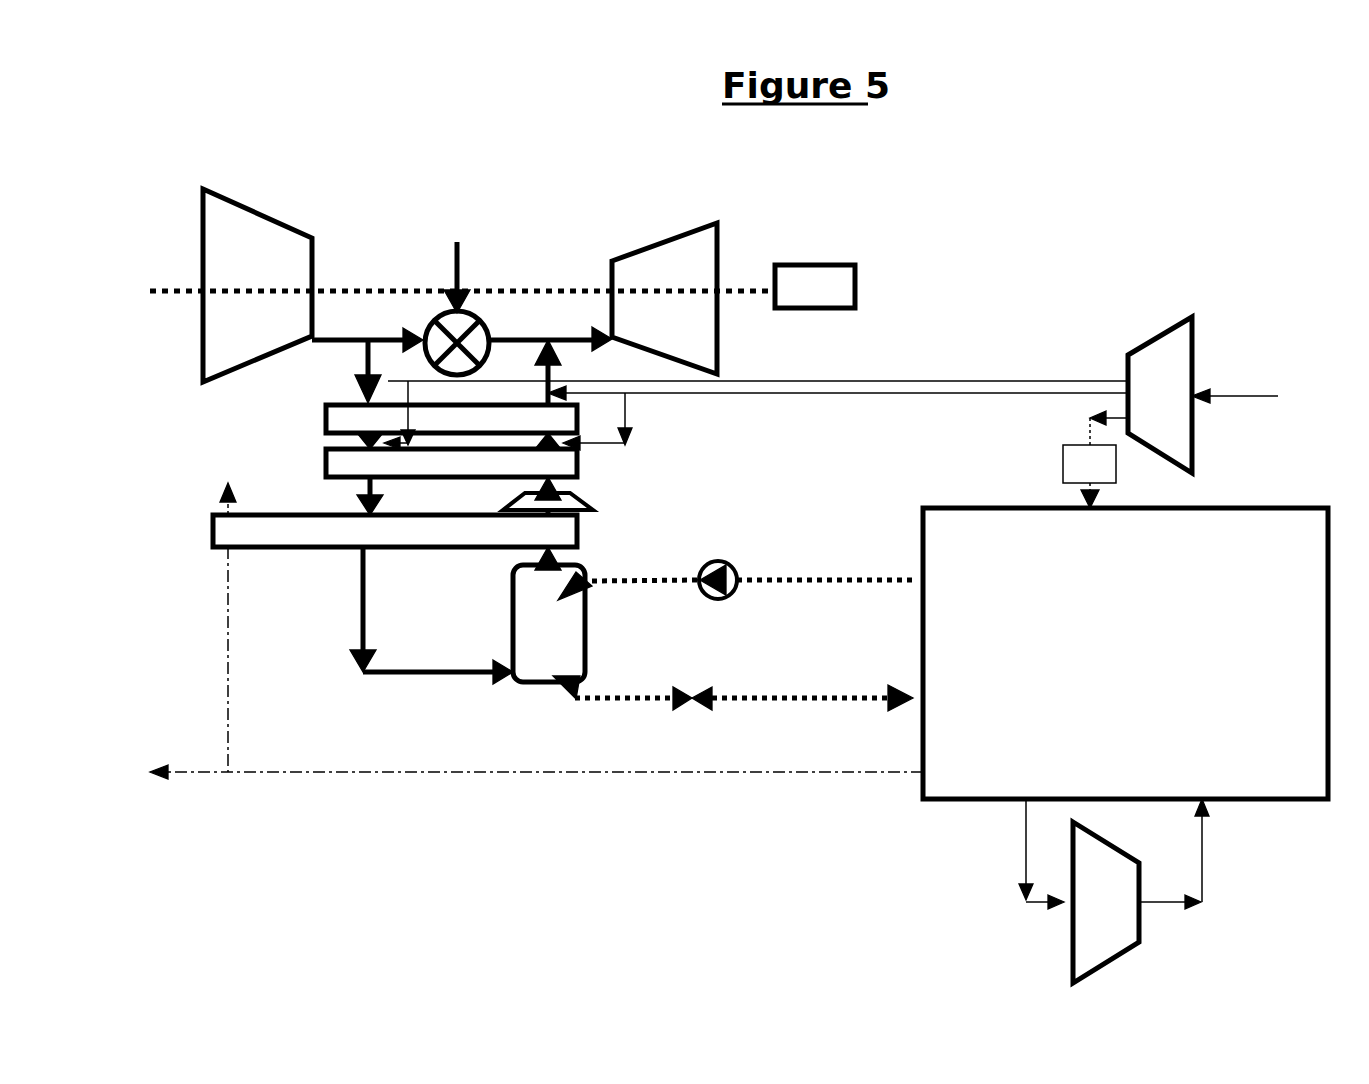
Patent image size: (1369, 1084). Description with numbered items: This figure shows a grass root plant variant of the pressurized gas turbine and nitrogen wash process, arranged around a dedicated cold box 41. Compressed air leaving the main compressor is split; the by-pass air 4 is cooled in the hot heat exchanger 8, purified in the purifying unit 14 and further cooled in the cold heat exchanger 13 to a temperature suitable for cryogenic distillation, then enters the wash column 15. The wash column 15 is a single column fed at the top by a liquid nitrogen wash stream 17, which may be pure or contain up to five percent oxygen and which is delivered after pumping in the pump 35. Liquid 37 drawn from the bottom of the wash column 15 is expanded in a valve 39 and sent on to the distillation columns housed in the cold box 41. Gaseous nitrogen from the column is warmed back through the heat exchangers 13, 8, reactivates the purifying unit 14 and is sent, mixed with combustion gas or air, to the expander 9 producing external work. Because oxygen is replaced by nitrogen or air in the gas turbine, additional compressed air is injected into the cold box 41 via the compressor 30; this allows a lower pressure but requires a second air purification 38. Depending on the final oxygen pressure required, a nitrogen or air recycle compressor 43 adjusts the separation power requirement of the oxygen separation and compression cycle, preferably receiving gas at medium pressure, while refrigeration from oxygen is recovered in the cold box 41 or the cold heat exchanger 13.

The air stream 4 is at (354, 371).
The heat exchanger 8 is at (451, 420).
The expander 9 is at (664, 293).
The heat exchanger 13 is at (395, 531).
The purifying unit 14 is at (451, 463).
The wash column 15 is at (548, 637).
The liquid nitrogen wash stream 17 is at (735, 577).
The compressor 30 is at (1153, 370).
The pump 35 is at (725, 564).
The liquid 37 is at (613, 702).
The second air purification 38 is at (1069, 464).
The valve 39 is at (692, 716).
The cold box 41 is at (1125, 653).
The recycle compressor 43 is at (1100, 913).